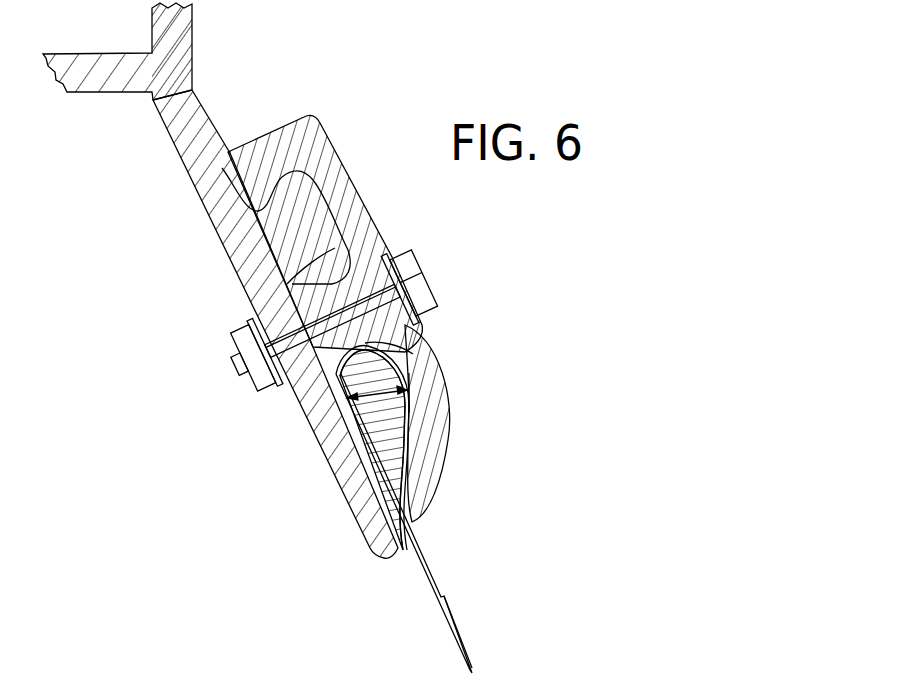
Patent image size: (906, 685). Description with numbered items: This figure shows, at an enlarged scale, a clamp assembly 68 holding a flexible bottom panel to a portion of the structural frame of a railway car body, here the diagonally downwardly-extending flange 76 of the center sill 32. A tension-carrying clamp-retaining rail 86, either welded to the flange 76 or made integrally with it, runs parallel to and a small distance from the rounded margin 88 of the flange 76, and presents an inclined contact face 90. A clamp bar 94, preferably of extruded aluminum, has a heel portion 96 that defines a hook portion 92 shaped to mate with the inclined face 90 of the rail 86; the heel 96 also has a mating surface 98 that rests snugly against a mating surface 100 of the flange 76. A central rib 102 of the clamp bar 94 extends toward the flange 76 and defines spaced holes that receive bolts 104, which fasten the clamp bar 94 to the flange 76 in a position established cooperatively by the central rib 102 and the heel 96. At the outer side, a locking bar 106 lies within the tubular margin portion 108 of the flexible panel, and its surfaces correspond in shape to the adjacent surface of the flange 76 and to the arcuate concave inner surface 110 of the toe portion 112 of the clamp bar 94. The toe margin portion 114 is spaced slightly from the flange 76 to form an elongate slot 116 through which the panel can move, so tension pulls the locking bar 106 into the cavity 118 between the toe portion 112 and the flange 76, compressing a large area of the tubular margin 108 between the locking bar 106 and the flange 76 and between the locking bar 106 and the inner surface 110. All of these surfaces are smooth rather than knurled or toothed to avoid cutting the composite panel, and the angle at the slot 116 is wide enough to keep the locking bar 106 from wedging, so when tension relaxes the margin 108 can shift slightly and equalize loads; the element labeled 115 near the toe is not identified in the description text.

The mounting wall 32 is at (192, 18).
The support arm 76 is at (312, 428).
The bracket 68 is at (277, 207).
The clamp member 86 is at (313, 218).
The upper surface 90 is at (262, 200).
The top edge 96 is at (290, 118).
The bracket body 100 is at (242, 158).
The notch 98 is at (240, 183).
The mounting face 92 is at (247, 228).
The washer 94 is at (381, 236).
The fastener / needle 104 is at (428, 279).
The clamp plate 102 is at (270, 280).
The spring loop 118 is at (423, 341).
The spring end 116 is at (413, 358).
The spring pad 106 is at (402, 413).
The roller 112 is at (441, 434).
The lower spring portion 108 is at (420, 464).
The leaf spring 110 is at (388, 424).
The spring tip 114 is at (410, 520).
The guide 115 is at (415, 530).
The lower end of arm 88 is at (389, 560).